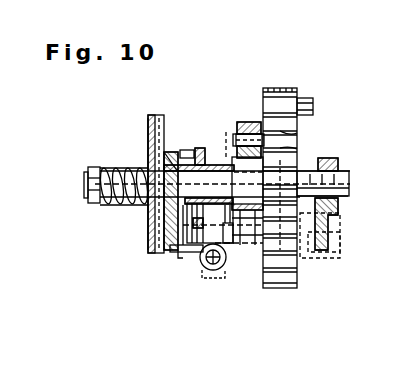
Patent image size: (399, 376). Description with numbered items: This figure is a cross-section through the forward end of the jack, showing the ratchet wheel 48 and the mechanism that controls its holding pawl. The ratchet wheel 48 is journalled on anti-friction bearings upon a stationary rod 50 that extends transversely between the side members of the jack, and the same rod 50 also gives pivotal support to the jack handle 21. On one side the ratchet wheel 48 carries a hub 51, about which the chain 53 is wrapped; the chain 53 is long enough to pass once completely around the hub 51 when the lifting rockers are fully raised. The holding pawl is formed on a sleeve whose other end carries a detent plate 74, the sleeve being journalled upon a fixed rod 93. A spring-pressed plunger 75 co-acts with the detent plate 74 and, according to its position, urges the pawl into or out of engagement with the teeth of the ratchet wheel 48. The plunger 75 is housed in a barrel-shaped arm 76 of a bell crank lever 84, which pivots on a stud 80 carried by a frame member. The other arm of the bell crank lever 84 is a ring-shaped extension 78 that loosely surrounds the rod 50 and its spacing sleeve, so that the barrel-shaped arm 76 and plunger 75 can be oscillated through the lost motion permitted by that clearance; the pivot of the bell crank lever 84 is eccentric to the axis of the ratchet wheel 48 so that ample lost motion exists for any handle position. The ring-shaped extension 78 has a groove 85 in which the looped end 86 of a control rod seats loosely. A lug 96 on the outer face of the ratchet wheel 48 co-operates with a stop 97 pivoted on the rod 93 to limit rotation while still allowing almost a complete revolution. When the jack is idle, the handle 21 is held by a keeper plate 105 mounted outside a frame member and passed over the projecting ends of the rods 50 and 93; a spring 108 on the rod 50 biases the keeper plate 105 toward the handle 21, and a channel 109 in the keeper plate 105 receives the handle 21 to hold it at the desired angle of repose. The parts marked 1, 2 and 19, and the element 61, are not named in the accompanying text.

The frame 1 is at (323, 250).
The shaft 2 is at (180, 258).
The housing body 19 is at (229, 160).
The jack handle 21 is at (170, 215).
The ratchet wheel 48 is at (265, 88).
The stationary rod 50 is at (349, 177).
The hub 51 is at (236, 146).
The chain 53 is at (249, 122).
The gear teeth 61 is at (297, 148).
The detent plate 74 is at (202, 278).
The spring-pressed plunger 75 is at (203, 262).
The barrel-shaped arm 76 is at (224, 262).
The ring-shaped extension 78 is at (218, 150).
The stud 80 is at (232, 242).
The bell crank lever 84 is at (194, 250).
The groove 85 is at (188, 152).
The looped end 86 is at (199, 149).
The fixed rod 93 is at (338, 238).
The lug 96 is at (313, 103).
The stop 97 is at (336, 220).
The keeper plate 105 is at (163, 124).
The spring 108 is at (136, 206).
The channel 109 is at (148, 120).